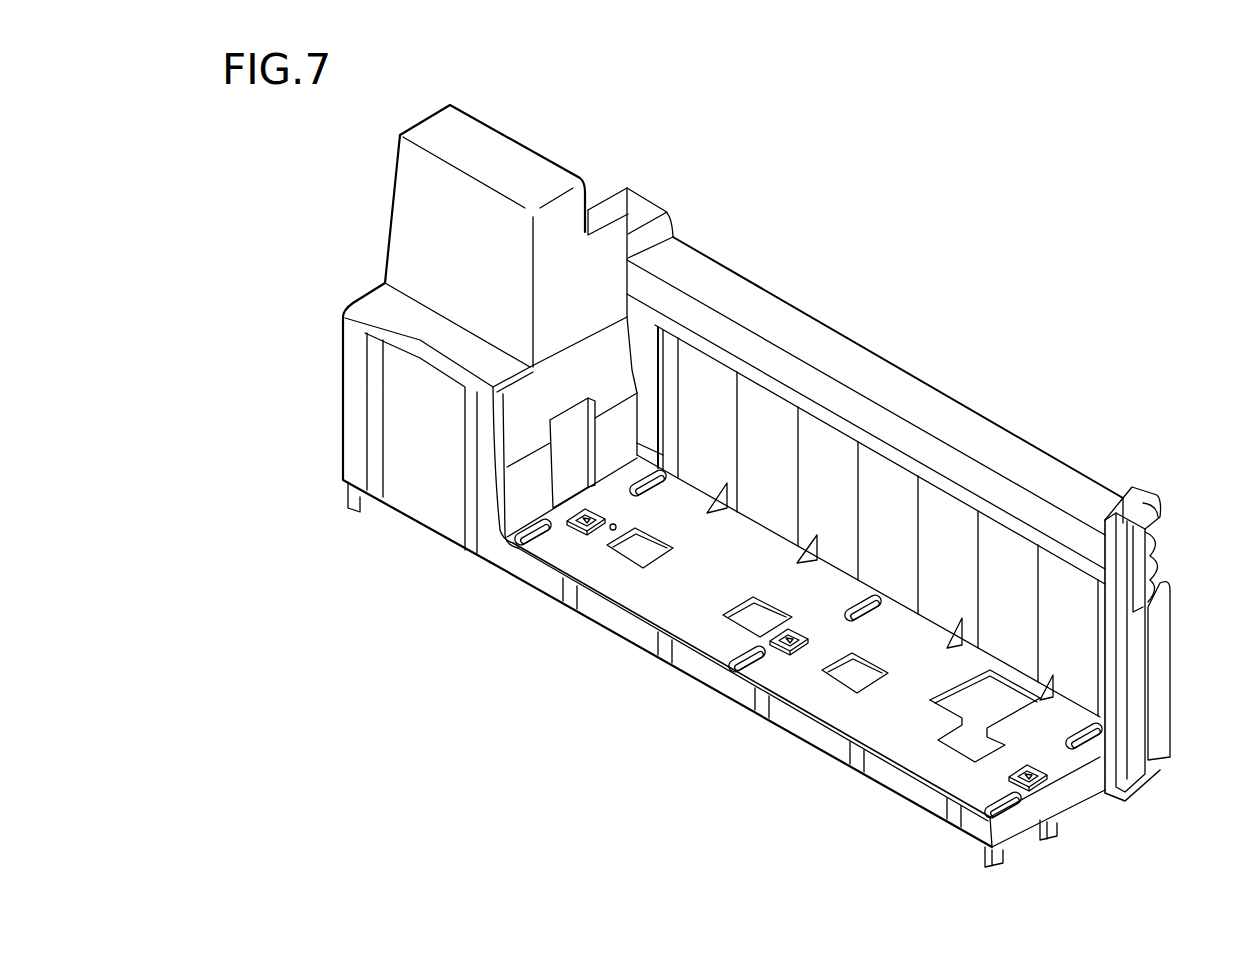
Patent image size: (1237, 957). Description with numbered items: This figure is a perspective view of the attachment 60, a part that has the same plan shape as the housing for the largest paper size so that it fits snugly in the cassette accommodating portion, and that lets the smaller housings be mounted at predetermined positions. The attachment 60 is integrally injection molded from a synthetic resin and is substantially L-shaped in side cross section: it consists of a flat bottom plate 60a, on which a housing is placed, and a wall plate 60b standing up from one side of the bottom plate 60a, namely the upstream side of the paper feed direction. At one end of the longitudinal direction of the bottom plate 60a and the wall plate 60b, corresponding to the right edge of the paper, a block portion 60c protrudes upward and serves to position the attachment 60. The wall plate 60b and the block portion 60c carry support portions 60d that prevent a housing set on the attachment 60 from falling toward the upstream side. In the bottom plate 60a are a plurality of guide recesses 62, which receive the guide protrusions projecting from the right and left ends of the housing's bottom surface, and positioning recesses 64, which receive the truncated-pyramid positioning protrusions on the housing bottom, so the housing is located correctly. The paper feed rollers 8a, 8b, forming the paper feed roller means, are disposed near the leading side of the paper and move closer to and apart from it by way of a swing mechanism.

The attachment 60 is at (827, 320).
The bottom plate 60a is at (677, 600).
The wall plate 60b is at (1012, 567).
The block portion 60c is at (487, 215).
The support portion 60d is at (643, 213).
The guide recesses 62 is at (655, 490).
The positioning recesses 64 is at (577, 533).
The paper feed roller 8a is at (922, 410).
The paper feed roller 8b is at (980, 493).